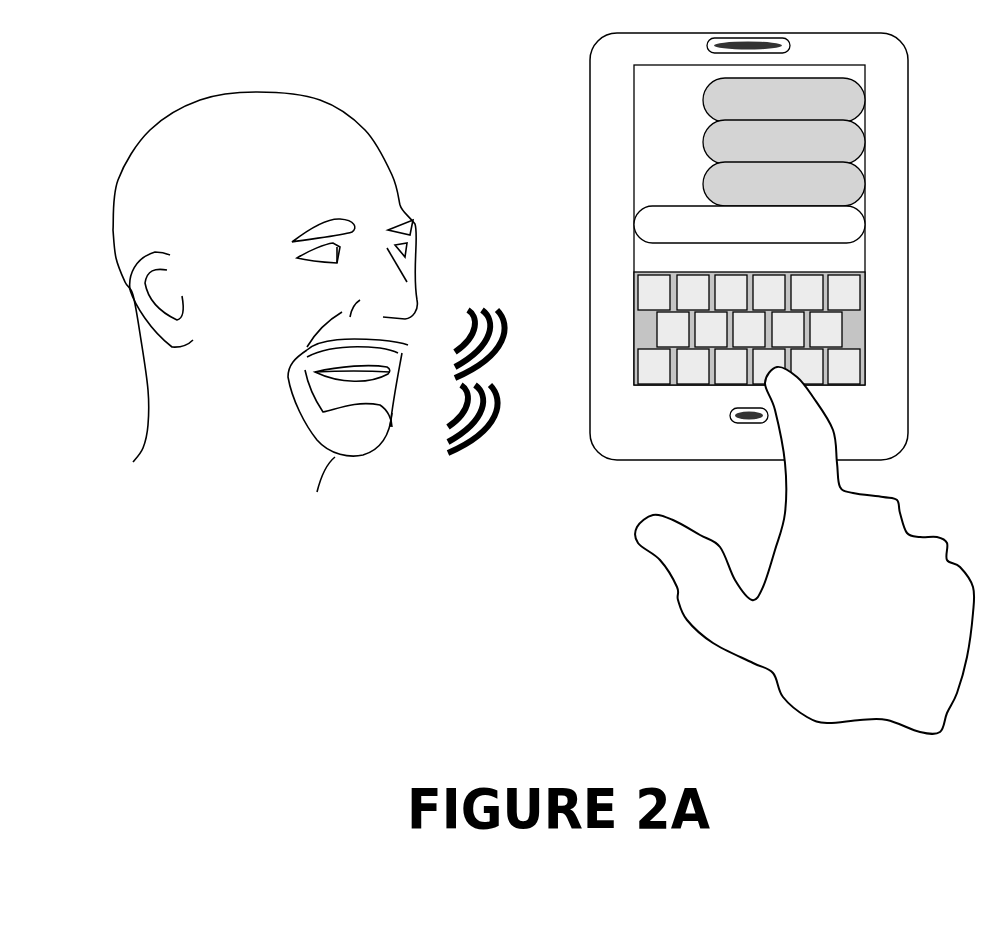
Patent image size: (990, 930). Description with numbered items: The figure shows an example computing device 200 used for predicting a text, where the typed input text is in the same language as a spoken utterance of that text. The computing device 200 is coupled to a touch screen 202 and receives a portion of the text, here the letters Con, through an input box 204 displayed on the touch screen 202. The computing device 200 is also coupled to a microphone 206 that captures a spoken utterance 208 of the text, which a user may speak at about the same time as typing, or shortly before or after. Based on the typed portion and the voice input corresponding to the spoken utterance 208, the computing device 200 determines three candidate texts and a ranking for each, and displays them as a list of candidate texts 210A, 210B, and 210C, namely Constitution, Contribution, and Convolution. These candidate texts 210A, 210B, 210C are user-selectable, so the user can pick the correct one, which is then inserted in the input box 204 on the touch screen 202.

The computing device 200 is at (908, 77).
The touch screen 202 is at (655, 386).
The input box 204 is at (752, 243).
The microphone 206 is at (730, 414).
The spoken utterance 208 is at (505, 328).
The candidate text 210A is at (703, 101).
The candidate text 210B is at (703, 143).
The candidate text 210C is at (703, 185).